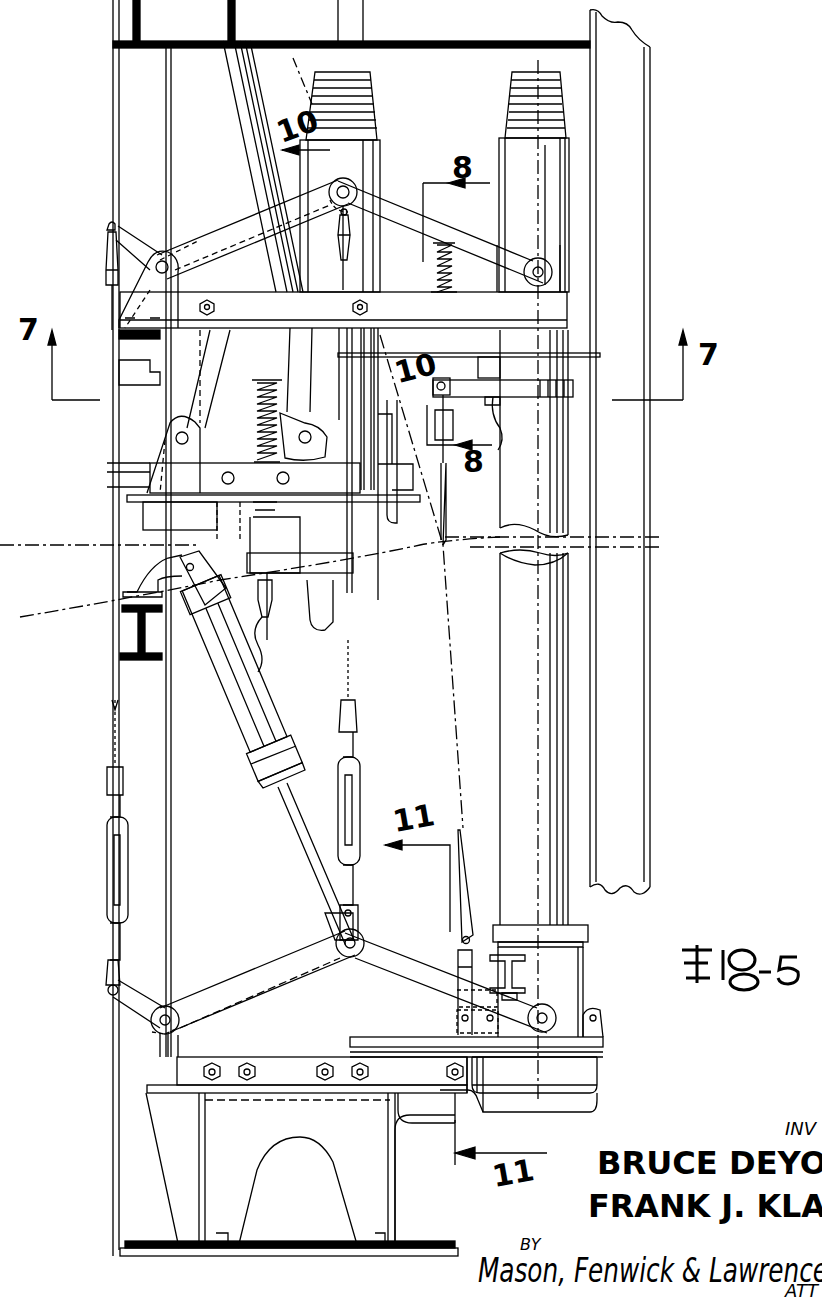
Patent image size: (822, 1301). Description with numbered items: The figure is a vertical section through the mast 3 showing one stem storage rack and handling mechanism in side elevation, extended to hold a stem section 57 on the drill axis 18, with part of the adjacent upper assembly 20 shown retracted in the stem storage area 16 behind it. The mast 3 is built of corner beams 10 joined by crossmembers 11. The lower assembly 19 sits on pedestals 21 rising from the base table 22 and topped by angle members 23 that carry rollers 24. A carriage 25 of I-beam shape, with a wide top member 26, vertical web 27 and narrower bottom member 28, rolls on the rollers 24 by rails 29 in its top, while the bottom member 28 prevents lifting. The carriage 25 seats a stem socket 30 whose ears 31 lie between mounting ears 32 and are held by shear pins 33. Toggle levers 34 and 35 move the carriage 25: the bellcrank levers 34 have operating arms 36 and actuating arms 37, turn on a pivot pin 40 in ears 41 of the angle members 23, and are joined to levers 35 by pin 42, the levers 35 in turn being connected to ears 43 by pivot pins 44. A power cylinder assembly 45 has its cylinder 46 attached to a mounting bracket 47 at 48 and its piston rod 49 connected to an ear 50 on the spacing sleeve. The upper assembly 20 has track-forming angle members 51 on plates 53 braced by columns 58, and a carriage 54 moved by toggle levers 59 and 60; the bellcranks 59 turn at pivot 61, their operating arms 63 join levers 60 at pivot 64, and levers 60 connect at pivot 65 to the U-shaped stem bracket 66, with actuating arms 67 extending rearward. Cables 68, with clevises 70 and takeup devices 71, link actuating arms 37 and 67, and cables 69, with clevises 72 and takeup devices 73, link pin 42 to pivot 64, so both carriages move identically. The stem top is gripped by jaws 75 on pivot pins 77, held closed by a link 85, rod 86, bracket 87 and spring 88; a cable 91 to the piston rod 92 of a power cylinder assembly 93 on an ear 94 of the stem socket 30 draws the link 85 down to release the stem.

The mast 3 is at (110, 92).
The corner beams 10 is at (112, 116).
The crossmembers 11 is at (135, 22).
The stem storage area 16 is at (500, 378).
The drill axis 18 is at (538, 60).
The lower assembly 19 is at (268, 950).
The upper assembly 20 is at (228, 215).
The pedestals 21 is at (380, 1192).
The base table 22 is at (425, 1248).
The angle members 23 is at (400, 1080).
The rollers 24 is at (300, 1057).
The carriage 25 is at (605, 1045).
The top member 26 is at (360, 1042).
The vertical web 27 is at (597, 1078).
The bottom member 28 is at (590, 1110).
The rails 29 is at (600, 1062).
The stem socket 30 is at (590, 940).
The ears 31 is at (592, 1010).
The mounting ears 32 is at (605, 1025).
The shear pins 33 is at (605, 1012).
The toggle levers 34 is at (215, 978).
The toggle levers 35 is at (385, 938).
The operating arms 36 is at (265, 988).
The actuating arms 37 is at (150, 970).
The pivot pin 40 is at (150, 1020).
The ears 41 is at (155, 1045).
The pin 42 is at (350, 957).
The ears 43 is at (500, 1075).
The pivot pins 44 is at (550, 1000).
The power cylinder assembly 45 is at (220, 695).
The cylinder 46 is at (272, 718).
The mounting bracket 47 is at (135, 578).
The pivotal attachment 48 is at (118, 597).
The piston rod 49 is at (280, 810).
The ear 50 is at (335, 915).
The angle members 51 is at (190, 330).
The plates 53 is at (172, 320).
The carriage 54 is at (433, 352).
The stem section 57 is at (378, 545).
The columns 58 is at (238, 82).
The toggle levers 59 is at (300, 200).
The levers 60 is at (390, 190).
The pivot 61 is at (160, 250).
The operating arms 63 is at (190, 240).
The pivot 64 is at (360, 178).
The pivot 65 is at (555, 265).
The U-shaped stem bracket 66 is at (560, 248).
The actuating arms 67 is at (128, 224).
The cables 68 is at (110, 728).
The cables 69 is at (355, 655).
The clevises 70 is at (108, 258).
The takeup devices 71 is at (107, 868).
The clevises 72 is at (343, 240).
The takeup devices 73 is at (360, 782).
The jaws 75 is at (520, 397).
The pivot pin 77 is at (488, 440).
The link 85 is at (262, 548).
The rod 86 is at (440, 250).
The bracket 87 is at (235, 520).
The spring 88 is at (432, 280).
The cable 91 is at (442, 520).
The piston rod 92 is at (455, 940).
The power cylinder assembly 93 is at (420, 985).
The ear 94 is at (480, 1095).